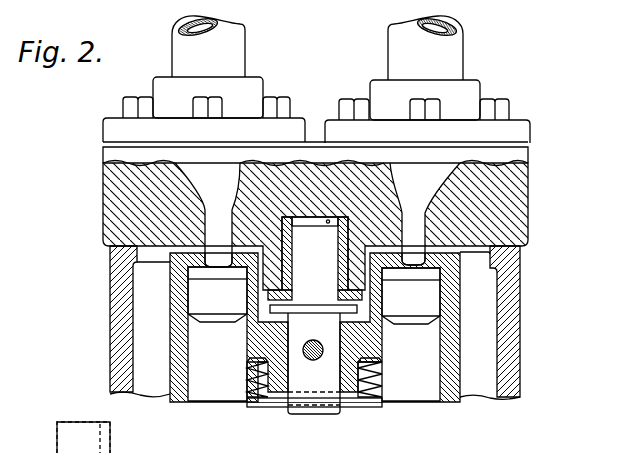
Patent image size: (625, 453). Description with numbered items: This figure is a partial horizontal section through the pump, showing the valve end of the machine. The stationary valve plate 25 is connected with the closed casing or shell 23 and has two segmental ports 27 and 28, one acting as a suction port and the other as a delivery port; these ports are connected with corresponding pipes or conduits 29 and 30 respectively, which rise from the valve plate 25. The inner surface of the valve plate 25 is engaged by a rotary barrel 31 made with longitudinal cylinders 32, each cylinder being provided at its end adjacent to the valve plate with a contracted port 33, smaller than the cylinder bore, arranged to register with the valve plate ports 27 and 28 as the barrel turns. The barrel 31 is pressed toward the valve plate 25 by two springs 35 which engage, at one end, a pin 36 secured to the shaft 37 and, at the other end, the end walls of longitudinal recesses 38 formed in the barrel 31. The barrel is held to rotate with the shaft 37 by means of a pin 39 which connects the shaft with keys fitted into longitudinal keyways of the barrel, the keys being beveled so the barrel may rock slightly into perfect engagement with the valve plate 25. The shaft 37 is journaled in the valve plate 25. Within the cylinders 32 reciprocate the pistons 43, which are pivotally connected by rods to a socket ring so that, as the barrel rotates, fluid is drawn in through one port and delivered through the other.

The closed casing or shell 23 is at (520, 336).
The stationary valve plate 25 is at (528, 201).
The segmental port 27 is at (215, 220).
The segmental port 28 is at (414, 220).
The pipe or conduit 29 is at (208, 46).
The pipe or conduit 30 is at (425, 47).
The rotary barrel 31 is at (315, 325).
The longitudinal cylinders 32 is at (314, 301).
The contracted ports 33 is at (218, 262).
The springs 35 is at (258, 398).
The pin 36 is at (280, 399).
The shaft 37 is at (315, 265).
The longitudinal recesses 38 is at (247, 365).
The pin 39 is at (313, 361).
The pistons 43 is at (220, 390).